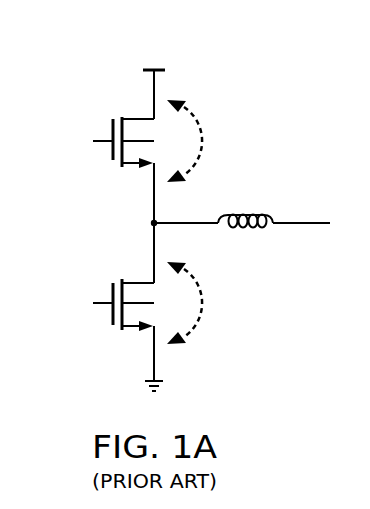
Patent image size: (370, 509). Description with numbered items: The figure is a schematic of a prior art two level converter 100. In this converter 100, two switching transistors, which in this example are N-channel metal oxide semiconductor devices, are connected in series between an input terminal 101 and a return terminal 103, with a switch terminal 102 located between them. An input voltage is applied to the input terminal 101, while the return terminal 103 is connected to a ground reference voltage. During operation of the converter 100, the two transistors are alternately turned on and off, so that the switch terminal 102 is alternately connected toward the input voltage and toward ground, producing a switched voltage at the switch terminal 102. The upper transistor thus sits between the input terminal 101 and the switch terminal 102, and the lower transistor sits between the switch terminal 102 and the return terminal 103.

The two level converter 100 is at (83, 79).
The input terminal 101 is at (160, 71).
The switch terminal 102 is at (154, 223).
The return terminal 103 is at (165, 387).